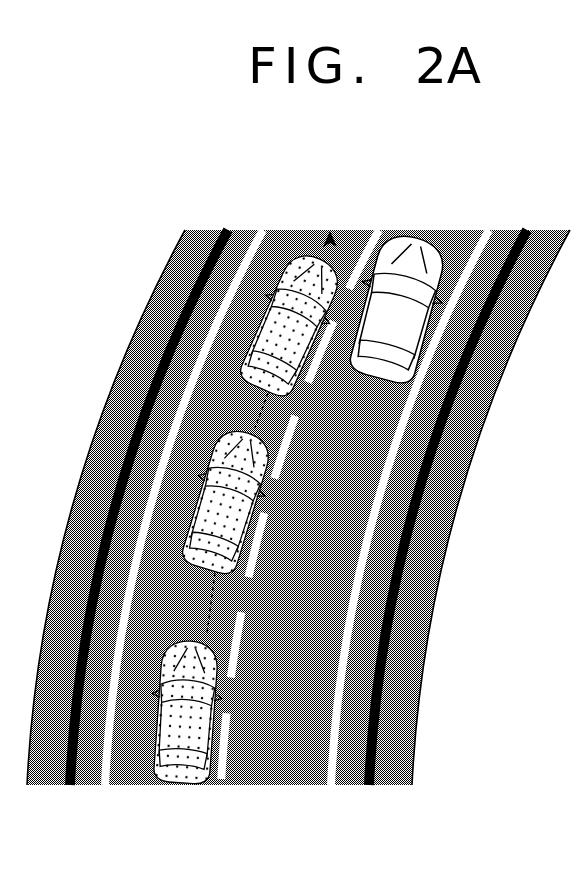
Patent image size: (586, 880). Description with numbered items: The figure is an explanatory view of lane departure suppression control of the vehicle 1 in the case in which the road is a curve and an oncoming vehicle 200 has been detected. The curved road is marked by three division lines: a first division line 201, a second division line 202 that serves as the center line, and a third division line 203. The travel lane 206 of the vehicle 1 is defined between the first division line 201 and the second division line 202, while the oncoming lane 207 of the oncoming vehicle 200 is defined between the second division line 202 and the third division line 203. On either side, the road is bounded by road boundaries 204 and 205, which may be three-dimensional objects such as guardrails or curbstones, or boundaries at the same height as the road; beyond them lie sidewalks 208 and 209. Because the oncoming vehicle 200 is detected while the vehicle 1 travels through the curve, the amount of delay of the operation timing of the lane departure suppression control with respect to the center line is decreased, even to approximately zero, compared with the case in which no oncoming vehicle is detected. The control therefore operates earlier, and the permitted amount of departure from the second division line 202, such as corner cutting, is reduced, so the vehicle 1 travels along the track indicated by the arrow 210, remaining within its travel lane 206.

The vehicle 1 is at (297, 392).
The oncoming vehicle 200 is at (387, 387).
The first division line 201 is at (263, 237).
The second division line 202 is at (375, 237).
The third division line 203 is at (489, 235).
The road boundary 204 is at (70, 788).
The road boundary 205 is at (370, 787).
The travel lane 206 is at (135, 788).
The oncoming lane 207 is at (273, 777).
The sidewalk 208 is at (197, 250).
The sidewalk 209 is at (543, 250).
The arrow 210 is at (207, 633).